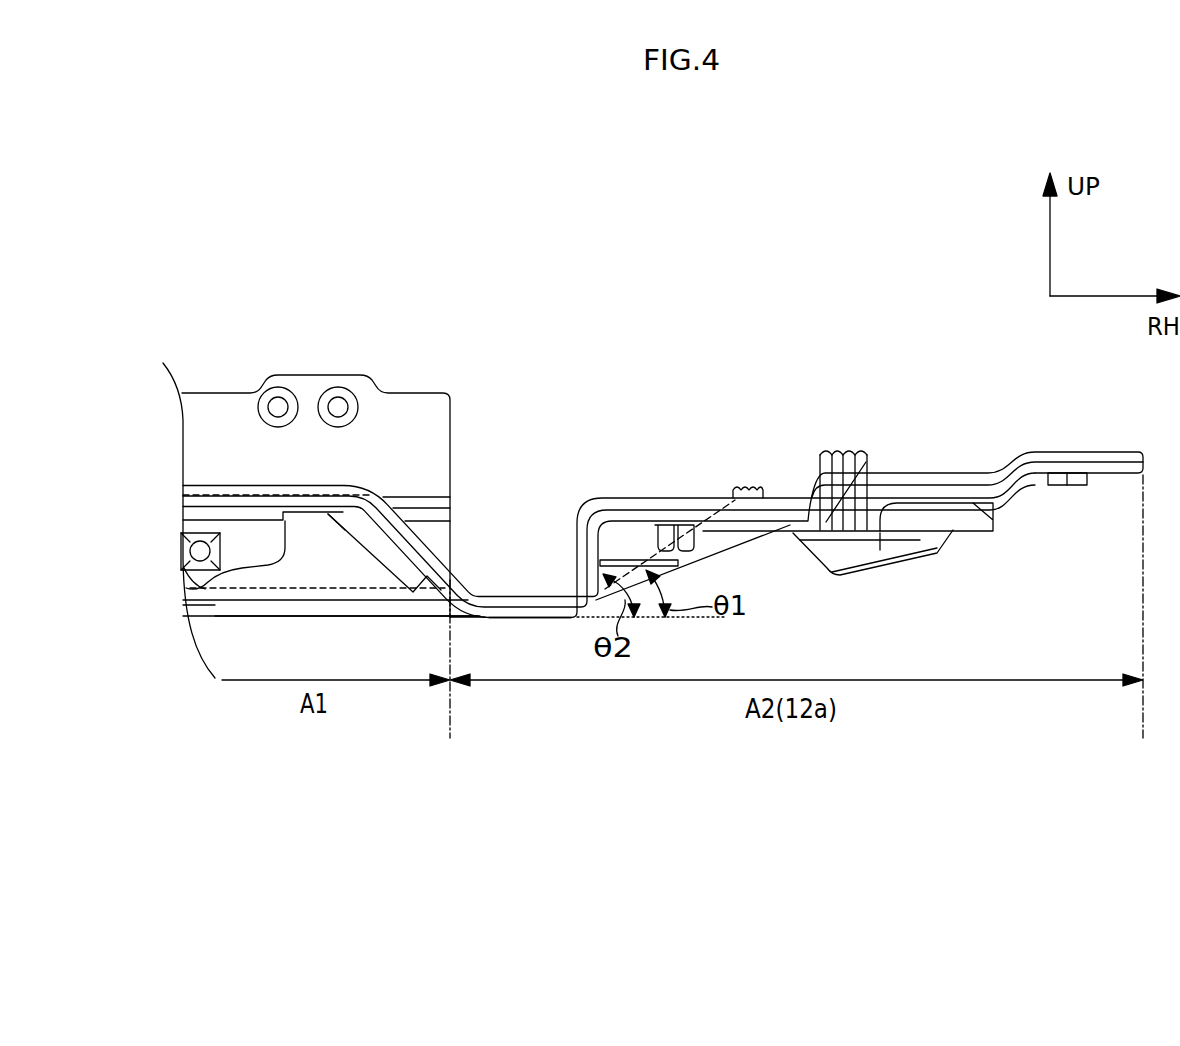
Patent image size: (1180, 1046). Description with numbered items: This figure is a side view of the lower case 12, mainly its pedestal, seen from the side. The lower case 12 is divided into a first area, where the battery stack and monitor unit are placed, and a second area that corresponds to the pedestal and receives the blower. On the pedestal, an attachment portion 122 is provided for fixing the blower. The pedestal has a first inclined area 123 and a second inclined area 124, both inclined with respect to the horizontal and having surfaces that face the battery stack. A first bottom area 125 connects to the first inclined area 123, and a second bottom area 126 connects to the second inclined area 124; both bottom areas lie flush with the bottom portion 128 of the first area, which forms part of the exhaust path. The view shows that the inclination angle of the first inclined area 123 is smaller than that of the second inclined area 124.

The lower case 12 is at (413, 365).
The attachment portion 122 is at (1057, 486).
The first inclined area 123 is at (673, 564).
The second inclined area 124 is at (582, 562).
The first bottom area 125 is at (460, 612).
The second bottom area 126 is at (528, 603).
The bottom portion 128 is at (247, 612).